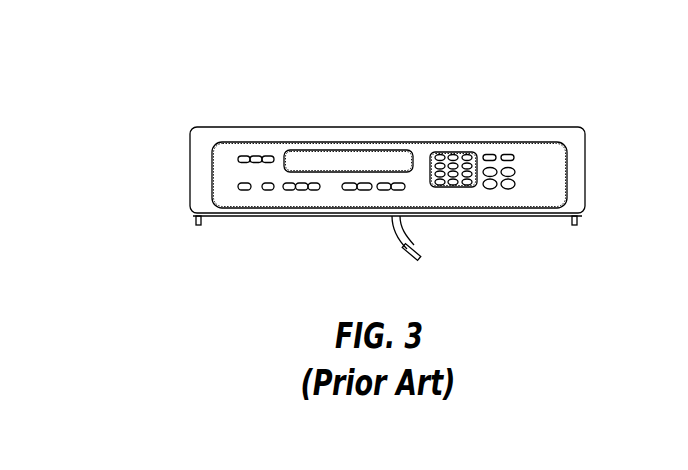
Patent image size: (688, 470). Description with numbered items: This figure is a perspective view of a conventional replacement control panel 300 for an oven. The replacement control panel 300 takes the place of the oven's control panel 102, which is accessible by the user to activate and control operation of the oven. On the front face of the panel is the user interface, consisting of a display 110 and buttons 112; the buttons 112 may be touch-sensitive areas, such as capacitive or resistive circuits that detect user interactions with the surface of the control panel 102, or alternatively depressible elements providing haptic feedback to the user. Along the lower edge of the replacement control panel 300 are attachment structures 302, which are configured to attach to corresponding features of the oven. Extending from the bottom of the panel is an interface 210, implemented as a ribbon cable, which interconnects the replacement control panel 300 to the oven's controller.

The replacement control panel 300 is at (140, 64).
The control panel 102 is at (220, 178).
The buttons 112 is at (268, 155).
The display 110 is at (391, 140).
The attachment structures 302 is at (195, 224).
The interface 210 is at (395, 247).